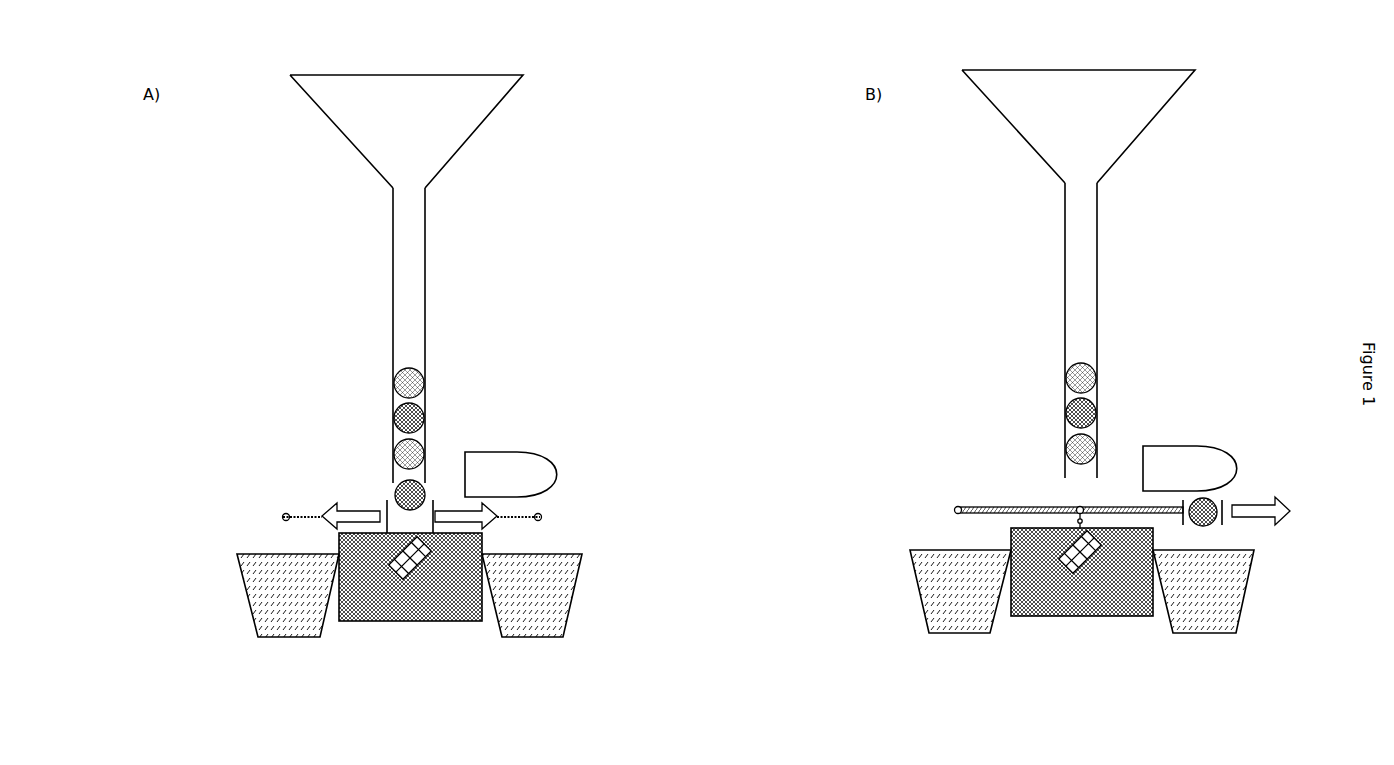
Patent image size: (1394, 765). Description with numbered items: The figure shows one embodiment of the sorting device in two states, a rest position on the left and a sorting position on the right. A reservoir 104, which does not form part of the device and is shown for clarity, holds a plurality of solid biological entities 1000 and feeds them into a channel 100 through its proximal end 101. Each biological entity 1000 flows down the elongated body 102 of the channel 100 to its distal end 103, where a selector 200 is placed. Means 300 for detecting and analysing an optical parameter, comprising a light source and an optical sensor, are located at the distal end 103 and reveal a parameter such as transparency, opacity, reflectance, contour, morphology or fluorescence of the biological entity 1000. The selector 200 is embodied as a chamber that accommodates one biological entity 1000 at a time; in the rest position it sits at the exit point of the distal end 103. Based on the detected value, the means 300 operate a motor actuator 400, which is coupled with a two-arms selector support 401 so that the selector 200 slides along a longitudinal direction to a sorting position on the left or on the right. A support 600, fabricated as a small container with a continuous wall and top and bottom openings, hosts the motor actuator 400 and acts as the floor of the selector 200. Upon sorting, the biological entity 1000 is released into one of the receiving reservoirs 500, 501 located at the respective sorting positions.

The channel 100 is at (441, 313).
The proximal end 101 is at (427, 203).
The elongated body 102 is at (393, 337).
The distal end 103 is at (393, 470).
The reservoir 104 is at (364, 158).
The selector 200 is at (380, 510).
The means for detecting and analysing an optical parameter 300 is at (517, 458).
The motor actuator 400 is at (388, 622).
The two-arms selector support 401 is at (283, 517).
The receiving reservoir 500 is at (582, 554).
The receiving reservoir 501 is at (237, 554).
The support 600 is at (455, 622).
The biological entity 1000 is at (427, 459).